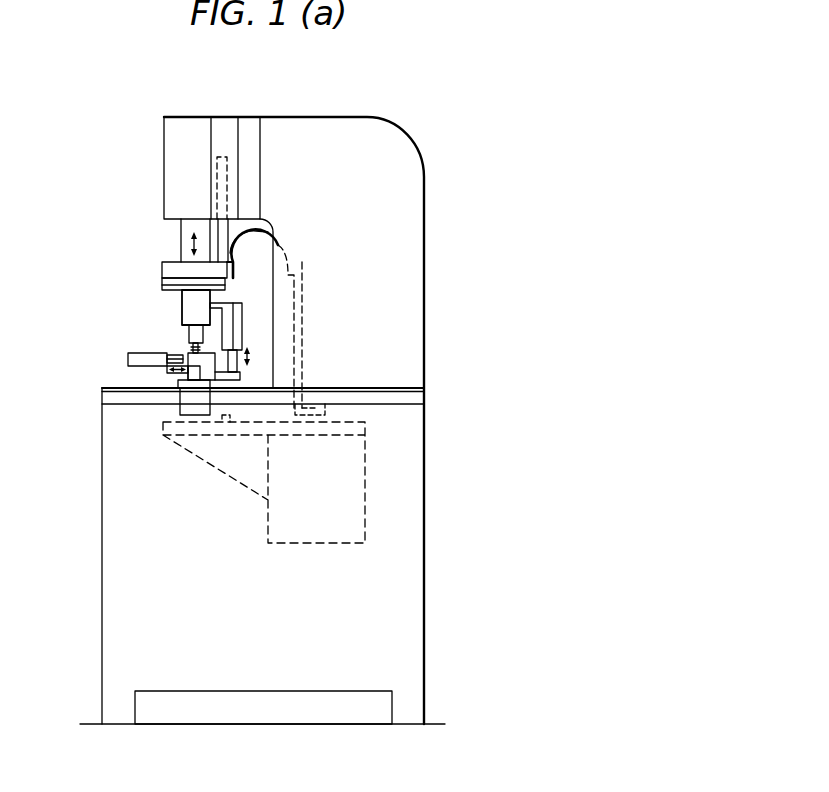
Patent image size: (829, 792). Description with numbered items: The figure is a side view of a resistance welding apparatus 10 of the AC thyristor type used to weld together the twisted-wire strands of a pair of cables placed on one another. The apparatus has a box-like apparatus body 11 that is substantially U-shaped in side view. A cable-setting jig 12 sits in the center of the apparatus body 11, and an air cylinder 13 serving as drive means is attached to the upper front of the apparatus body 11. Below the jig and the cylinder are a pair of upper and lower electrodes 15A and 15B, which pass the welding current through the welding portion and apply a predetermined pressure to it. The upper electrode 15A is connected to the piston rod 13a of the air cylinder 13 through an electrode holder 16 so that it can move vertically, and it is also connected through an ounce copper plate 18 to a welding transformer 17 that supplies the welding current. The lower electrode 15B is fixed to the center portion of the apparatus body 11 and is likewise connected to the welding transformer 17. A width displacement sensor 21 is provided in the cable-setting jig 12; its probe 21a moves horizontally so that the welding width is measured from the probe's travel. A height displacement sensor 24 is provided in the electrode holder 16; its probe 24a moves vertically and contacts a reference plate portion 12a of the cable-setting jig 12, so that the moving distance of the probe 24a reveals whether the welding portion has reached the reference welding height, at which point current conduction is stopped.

The resistance welding apparatus 10 is at (440, 412).
The apparatus body 11 is at (92, 588).
The cable-setting jig 12 is at (152, 374).
The reference plate portion 12a is at (232, 380).
The air cylinder 13 is at (164, 131).
The piston rod 13a is at (181, 235).
The upper electrode 15A is at (191, 349).
The lower electrode 15B is at (180, 378).
The electrode holder 16 is at (182, 305).
The welding transformer 17 is at (365, 522).
The ounce copper plate 18 is at (262, 228).
The width displacement sensor 21 is at (118, 360).
The probe 21a is at (175, 353).
The height displacement sensor 24 is at (255, 325).
The probe 24a is at (240, 374).